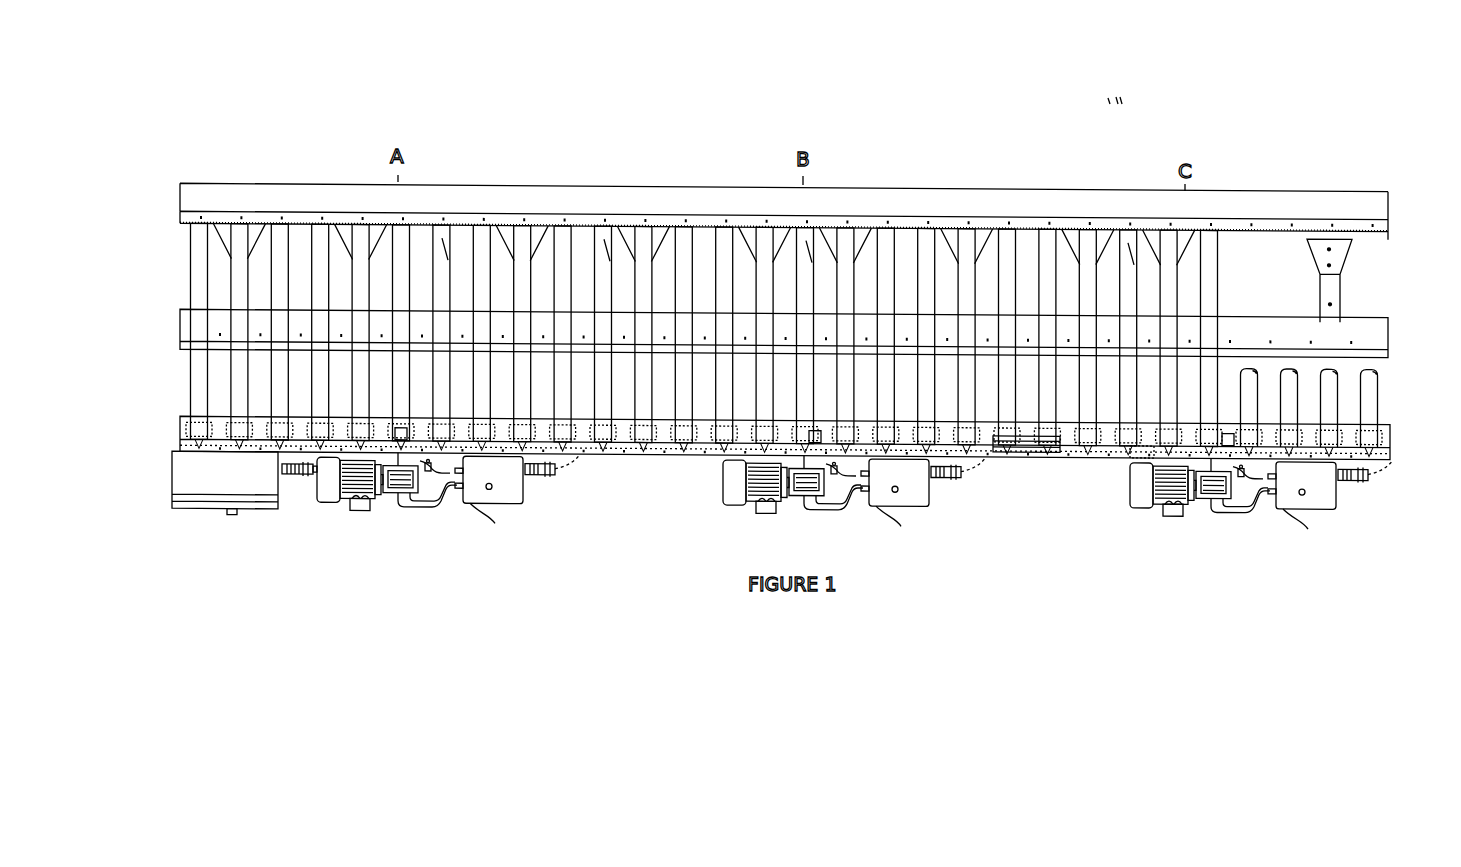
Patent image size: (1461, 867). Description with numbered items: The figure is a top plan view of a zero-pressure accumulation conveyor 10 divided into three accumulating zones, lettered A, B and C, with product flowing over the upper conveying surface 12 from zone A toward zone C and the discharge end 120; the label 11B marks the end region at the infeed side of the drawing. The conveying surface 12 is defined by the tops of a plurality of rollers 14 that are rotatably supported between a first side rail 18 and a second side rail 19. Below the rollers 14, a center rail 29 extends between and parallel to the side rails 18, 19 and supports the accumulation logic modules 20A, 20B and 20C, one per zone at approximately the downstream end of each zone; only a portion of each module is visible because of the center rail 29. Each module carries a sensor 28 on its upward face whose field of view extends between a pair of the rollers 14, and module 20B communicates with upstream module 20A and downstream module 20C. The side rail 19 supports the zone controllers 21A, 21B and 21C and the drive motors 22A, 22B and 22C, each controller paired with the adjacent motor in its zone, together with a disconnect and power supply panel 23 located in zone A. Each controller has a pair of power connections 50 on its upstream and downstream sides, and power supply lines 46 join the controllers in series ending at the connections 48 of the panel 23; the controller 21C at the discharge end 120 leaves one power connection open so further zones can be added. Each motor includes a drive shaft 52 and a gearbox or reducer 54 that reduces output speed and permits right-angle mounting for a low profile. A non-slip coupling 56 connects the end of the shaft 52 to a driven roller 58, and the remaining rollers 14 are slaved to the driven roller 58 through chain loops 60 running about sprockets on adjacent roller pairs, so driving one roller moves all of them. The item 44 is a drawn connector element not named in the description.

The zero-pressure accumulation conveyor 10 is at (1176, 114).
The end section 11B is at (161, 220).
The upper conveying surface 12 is at (603, 245).
The rollers 14 is at (440, 248).
The first side rail 18 is at (213, 245).
The second side rail 19 is at (180, 426).
The accumulation logic module 20A is at (545, 295).
The accumulation logic module 20B is at (958, 309).
The accumulation logic module 20C is at (1357, 314).
The zone controller 21A is at (515, 495).
The zone controller 21B is at (925, 500).
The zone controller 21C is at (1313, 503).
The drive motor 22A is at (333, 497).
The drive motor 22B is at (738, 493).
The drive motor 22C is at (1140, 500).
The disconnect and power supply panel 23 is at (215, 480).
The sensor 28 is at (570, 245).
The center rail 29 is at (180, 318).
The coupling 44 is at (545, 478).
The power supply lines 46 is at (445, 480).
The connections 48 is at (292, 475).
The power connections 50 is at (468, 492).
The drive shaft 52 is at (404, 438).
The gearbox or reducer 54 is at (400, 488).
The non-slip coupling 56 is at (1140, 455).
The driven roller 58 is at (400, 240).
The chain loops 60 is at (1032, 450).
The discharge end 120 is at (1382, 260).